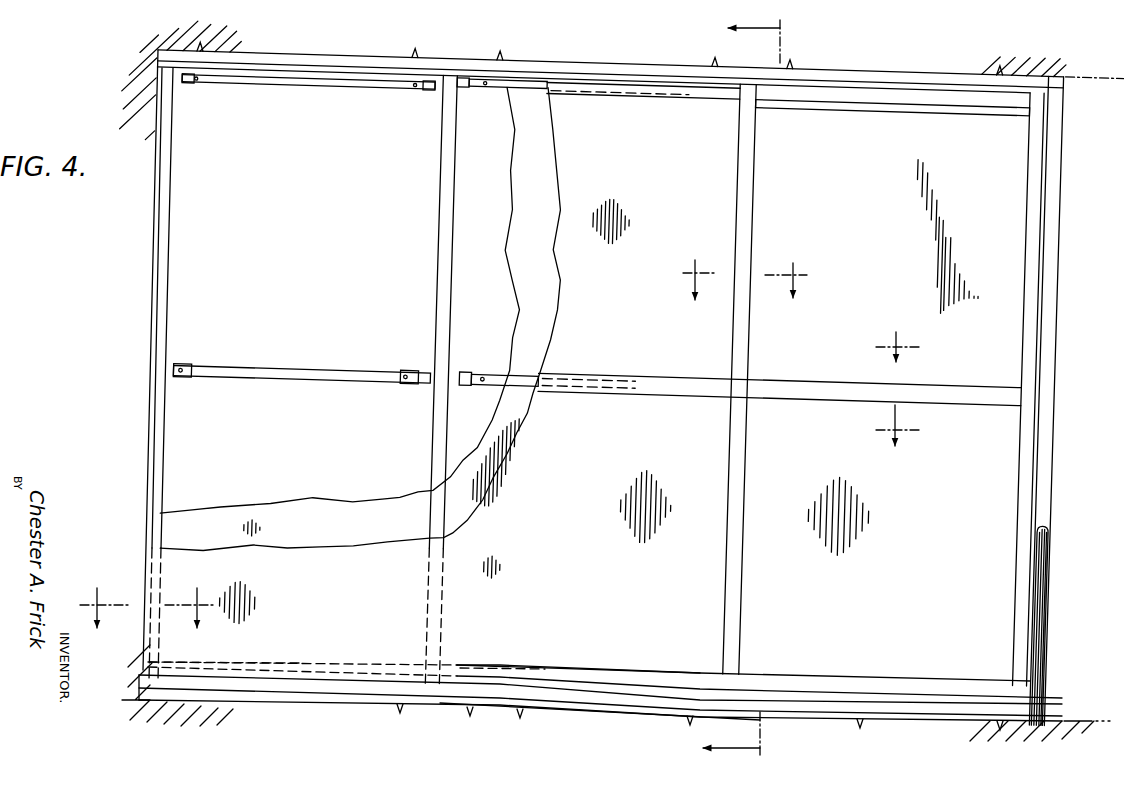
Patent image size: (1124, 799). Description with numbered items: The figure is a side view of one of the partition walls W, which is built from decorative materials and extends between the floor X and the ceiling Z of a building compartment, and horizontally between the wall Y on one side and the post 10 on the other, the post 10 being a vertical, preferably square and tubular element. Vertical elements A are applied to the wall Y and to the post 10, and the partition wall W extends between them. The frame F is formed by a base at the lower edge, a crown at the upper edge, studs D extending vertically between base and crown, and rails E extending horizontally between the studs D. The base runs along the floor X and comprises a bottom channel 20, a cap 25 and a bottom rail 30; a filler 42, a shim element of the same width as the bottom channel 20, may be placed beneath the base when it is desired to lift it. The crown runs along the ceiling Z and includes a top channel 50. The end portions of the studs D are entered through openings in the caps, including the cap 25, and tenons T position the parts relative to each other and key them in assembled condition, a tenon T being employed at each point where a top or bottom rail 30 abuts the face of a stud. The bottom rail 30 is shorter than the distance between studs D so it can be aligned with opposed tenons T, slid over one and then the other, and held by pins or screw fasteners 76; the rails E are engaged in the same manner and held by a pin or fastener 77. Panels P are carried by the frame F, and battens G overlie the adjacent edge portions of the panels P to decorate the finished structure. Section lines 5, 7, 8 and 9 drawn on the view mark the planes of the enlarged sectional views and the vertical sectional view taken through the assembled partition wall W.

The post 10 is at (1052, 361).
The top channel 50 is at (362, 48).
The pin or screw fastener 76 is at (486, 78).
The pin or fastener 77 is at (404, 370).
The bottom channel 20 is at (313, 687).
The cap 25 is at (543, 680).
The bottom rail 30 is at (258, 660).
The filler 42 is at (371, 705).
The section line 9- 9 is at (741, 390).
The section line 8- 8 is at (738, 280).
The section line 7- 7 is at (899, 386).
The section line 5- 5 is at (147, 599).
The vertical element A is at (160, 230).
The stud D is at (168, 168).
The rail E is at (490, 367).
The frame F is at (318, 365).
The batten G is at (930, 111).
The panel P is at (557, 292).
The tenon T is at (178, 81).
The partition wall W is at (863, 125).
The floor X is at (512, 711).
The wall Y is at (155, 272).
The ceiling Z is at (597, 63).